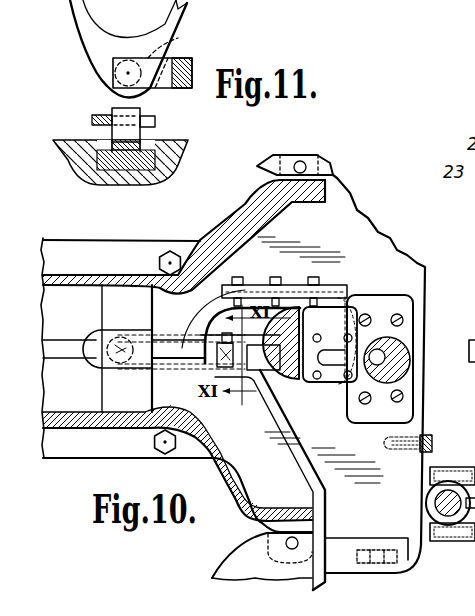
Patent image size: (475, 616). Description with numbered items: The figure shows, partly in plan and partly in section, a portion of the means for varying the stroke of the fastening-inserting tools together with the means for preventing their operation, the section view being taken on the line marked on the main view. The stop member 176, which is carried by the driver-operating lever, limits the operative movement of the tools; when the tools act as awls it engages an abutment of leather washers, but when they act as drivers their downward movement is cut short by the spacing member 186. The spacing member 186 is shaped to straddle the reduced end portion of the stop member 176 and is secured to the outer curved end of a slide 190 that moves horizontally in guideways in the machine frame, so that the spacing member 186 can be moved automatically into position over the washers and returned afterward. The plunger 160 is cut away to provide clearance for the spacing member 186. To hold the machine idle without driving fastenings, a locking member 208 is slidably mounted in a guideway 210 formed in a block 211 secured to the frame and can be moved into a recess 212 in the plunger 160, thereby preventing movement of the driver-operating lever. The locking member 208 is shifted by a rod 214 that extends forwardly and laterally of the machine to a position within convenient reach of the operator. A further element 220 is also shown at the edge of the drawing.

In FIG. 10, the plunger 160 is at (292, 382).
In FIG. 10, the stop member 176 is at (400, 345).
In FIG. 11, the spacing member 186 is at (168, 90).
In FIG. 10, the spacing member 186 is at (347, 384).
In FIG. 11, the slide 190 is at (174, 46).
In FIG. 10, the slide 190 is at (167, 350).
In FIG. 11, the locking member 208 is at (143, 133).
In FIG. 10, the locking member 208 is at (266, 362).
In FIG. 11, the guideway 210 is at (112, 147).
In FIG. 11, the block 211 is at (170, 170).
In FIG. 10, the recess 212 is at (283, 300).
In FIG. 11, the rod 214 is at (102, 115).
In FIG. 10, the rod 214 is at (320, 497).
In FIG. 10, the bracket 220 is at (474, 193).